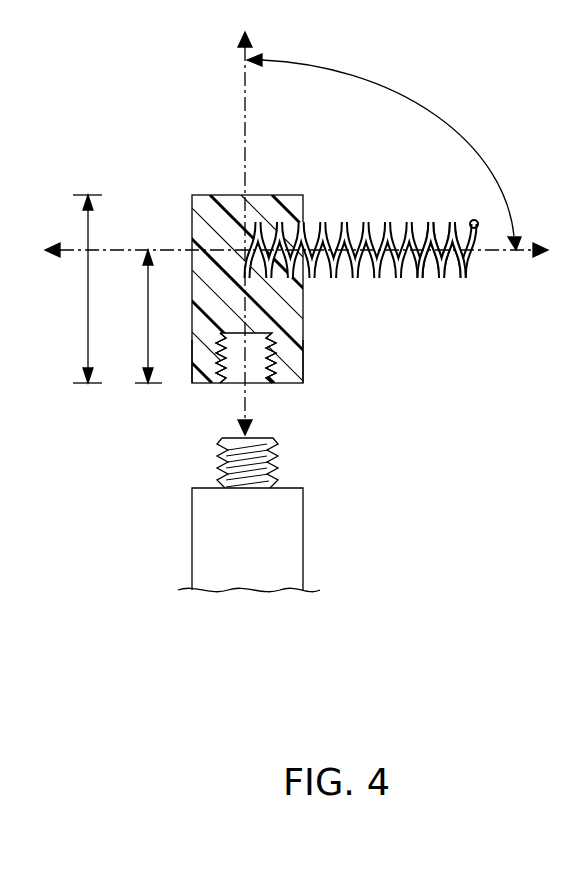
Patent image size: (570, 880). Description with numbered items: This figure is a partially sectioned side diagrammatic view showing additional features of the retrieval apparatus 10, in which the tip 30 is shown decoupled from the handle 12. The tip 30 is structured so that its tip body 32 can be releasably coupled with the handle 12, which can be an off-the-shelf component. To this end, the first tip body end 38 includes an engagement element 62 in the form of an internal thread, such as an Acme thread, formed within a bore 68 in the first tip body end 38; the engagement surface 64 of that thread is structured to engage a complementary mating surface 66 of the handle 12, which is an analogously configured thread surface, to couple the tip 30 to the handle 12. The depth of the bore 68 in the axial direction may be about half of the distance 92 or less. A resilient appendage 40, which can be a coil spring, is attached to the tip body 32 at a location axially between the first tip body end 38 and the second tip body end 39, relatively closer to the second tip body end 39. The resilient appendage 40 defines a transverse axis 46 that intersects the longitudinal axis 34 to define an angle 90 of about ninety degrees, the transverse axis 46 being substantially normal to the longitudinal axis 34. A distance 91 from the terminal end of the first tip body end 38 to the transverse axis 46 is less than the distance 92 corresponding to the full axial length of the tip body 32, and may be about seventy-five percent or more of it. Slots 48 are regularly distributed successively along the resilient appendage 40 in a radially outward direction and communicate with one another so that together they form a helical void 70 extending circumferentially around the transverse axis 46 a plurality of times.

The retrieval apparatus 10 is at (434, 447).
The handle 12 is at (303, 533).
The tip 30 is at (290, 158).
The tip body 32 is at (193, 385).
The longitudinal axis 34 is at (245, 88).
The first tip body end 38 is at (301, 385).
The second tip body end 39 is at (200, 195).
The resilient appendage 40 is at (325, 283).
The transverse axis 46 is at (132, 250).
The slots 48 is at (458, 283).
The engagement element 62 is at (290, 351).
The engagement surface 64 is at (228, 384).
The mating surface 66 is at (279, 458).
The bore 68 is at (262, 384).
The helical void 70 is at (470, 219).
The angle 90 is at (428, 104).
The distance 91 is at (146, 313).
The distance 92 is at (86, 313).